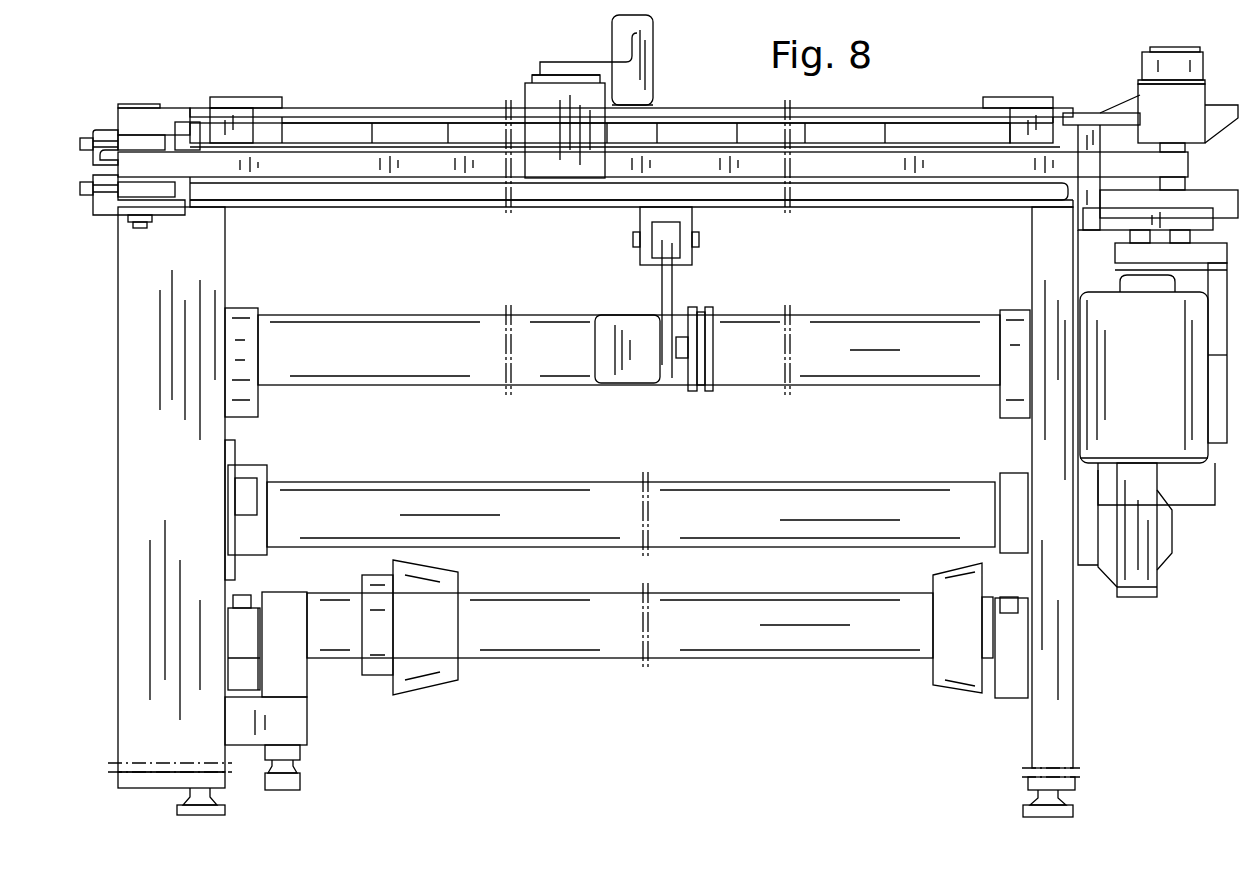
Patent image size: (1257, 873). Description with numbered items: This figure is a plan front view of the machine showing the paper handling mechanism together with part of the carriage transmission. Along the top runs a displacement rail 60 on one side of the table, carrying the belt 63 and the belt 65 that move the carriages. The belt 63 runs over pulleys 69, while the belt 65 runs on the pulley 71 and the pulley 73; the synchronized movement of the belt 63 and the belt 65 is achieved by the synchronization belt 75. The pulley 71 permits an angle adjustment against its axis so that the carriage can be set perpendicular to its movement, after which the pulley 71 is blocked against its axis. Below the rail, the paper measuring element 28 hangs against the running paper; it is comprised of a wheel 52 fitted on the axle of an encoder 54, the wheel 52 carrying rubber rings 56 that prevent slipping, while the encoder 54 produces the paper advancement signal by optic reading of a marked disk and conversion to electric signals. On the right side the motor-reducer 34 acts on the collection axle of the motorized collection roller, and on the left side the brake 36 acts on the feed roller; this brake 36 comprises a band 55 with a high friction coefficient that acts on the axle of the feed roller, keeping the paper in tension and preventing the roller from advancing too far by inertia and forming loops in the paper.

The paper measuring element 28 is at (695, 282).
The motor-reducer 34 is at (1175, 541).
The brake 36 is at (315, 695).
The wheel 52 is at (702, 395).
The encoder 54 is at (620, 390).
The band 55 is at (692, 395).
The rubber rings 56 is at (287, 600).
The displacement rail 60 is at (337, 122).
The belt 63 is at (137, 124).
The belt 65 is at (478, 165).
The pulleys 69 is at (122, 107).
The pulley 71 is at (1205, 83).
The pulley 73 is at (118, 182).
The synchronization belt 75 is at (1158, 67).